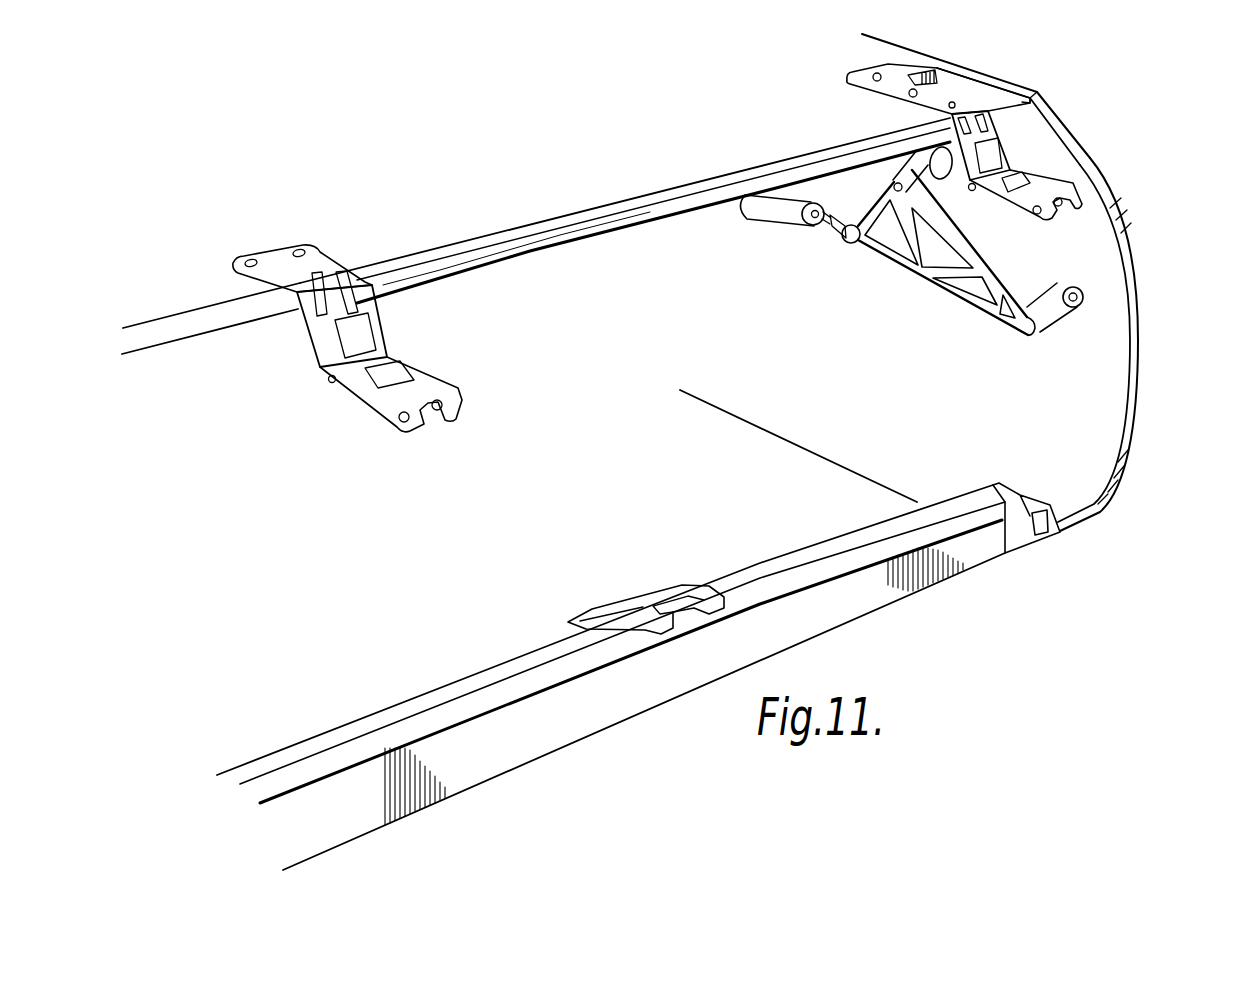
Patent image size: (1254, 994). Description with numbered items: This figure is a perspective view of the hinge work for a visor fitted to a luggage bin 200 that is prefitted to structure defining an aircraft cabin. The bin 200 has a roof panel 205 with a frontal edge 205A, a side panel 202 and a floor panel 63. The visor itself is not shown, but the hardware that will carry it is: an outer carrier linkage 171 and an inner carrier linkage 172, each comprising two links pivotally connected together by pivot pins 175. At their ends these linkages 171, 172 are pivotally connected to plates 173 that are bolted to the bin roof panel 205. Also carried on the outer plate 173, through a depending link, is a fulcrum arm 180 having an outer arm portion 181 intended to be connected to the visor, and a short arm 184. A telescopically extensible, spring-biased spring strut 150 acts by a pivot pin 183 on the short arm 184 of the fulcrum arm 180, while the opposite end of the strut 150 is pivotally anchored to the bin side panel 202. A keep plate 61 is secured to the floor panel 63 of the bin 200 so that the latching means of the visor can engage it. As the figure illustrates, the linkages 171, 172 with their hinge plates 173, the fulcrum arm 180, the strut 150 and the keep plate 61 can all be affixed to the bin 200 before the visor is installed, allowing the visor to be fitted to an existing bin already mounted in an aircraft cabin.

The keep plate 61 is at (612, 603).
The floor panel 63 is at (817, 523).
The spring strut 150 is at (783, 202).
The outer carrier linkage 171 is at (1012, 153).
The inner carrier linkage 172 is at (317, 337).
The plates 173 is at (274, 248).
The pivot pins 175 is at (331, 383).
The fulcrum arm 180 is at (963, 318).
The outer arm portion 181 is at (1067, 327).
The pivot pin 183 is at (843, 242).
The short arm 184 is at (888, 267).
The bin 200 is at (1135, 440).
The side panel 202 is at (1018, 90).
The roof panel 205 is at (770, 143).
The frontal edge 205A is at (170, 330).